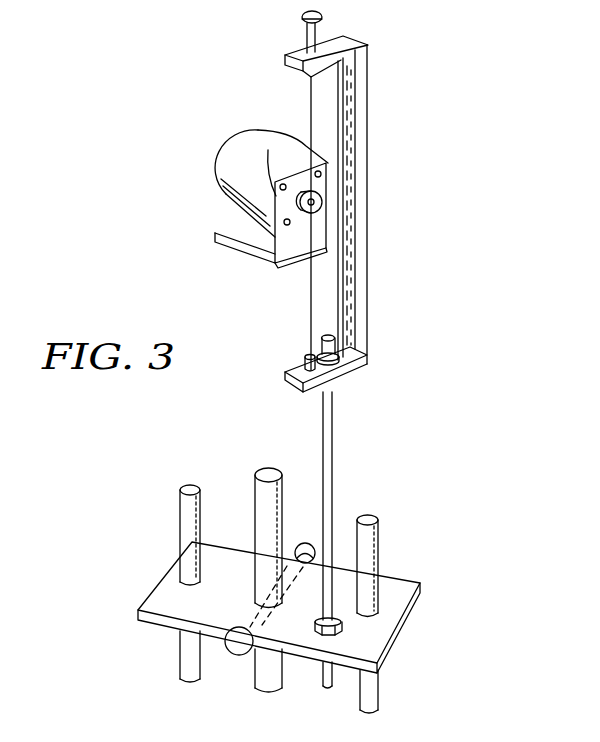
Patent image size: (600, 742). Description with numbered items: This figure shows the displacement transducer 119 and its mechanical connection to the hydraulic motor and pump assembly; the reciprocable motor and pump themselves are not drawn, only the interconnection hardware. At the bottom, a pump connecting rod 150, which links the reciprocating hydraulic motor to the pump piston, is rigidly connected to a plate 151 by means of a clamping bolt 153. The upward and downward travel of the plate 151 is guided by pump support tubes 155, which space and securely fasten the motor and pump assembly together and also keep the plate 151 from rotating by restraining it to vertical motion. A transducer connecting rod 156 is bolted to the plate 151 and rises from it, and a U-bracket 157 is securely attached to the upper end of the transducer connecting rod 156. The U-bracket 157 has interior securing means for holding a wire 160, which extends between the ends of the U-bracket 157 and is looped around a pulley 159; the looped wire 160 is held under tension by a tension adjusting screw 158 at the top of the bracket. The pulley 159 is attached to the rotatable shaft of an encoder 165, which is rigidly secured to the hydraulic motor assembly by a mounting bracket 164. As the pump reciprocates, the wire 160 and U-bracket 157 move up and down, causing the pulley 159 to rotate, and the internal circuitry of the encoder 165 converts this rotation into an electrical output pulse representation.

The displacement transducer 119 is at (397, 382).
The pump connecting rod 150 is at (258, 502).
The plate 151 is at (398, 628).
The clamping bolt 153 is at (310, 543).
The pump support tubes 155 is at (188, 518).
The transducer connecting rod 156 is at (330, 455).
The U-bracket 157 is at (363, 113).
The tension adjusting screw 158 is at (322, 15).
The pulley 159 is at (310, 212).
The wire 160 is at (310, 112).
The mounting bracket 164 is at (229, 235).
The encoder 165 is at (219, 187).